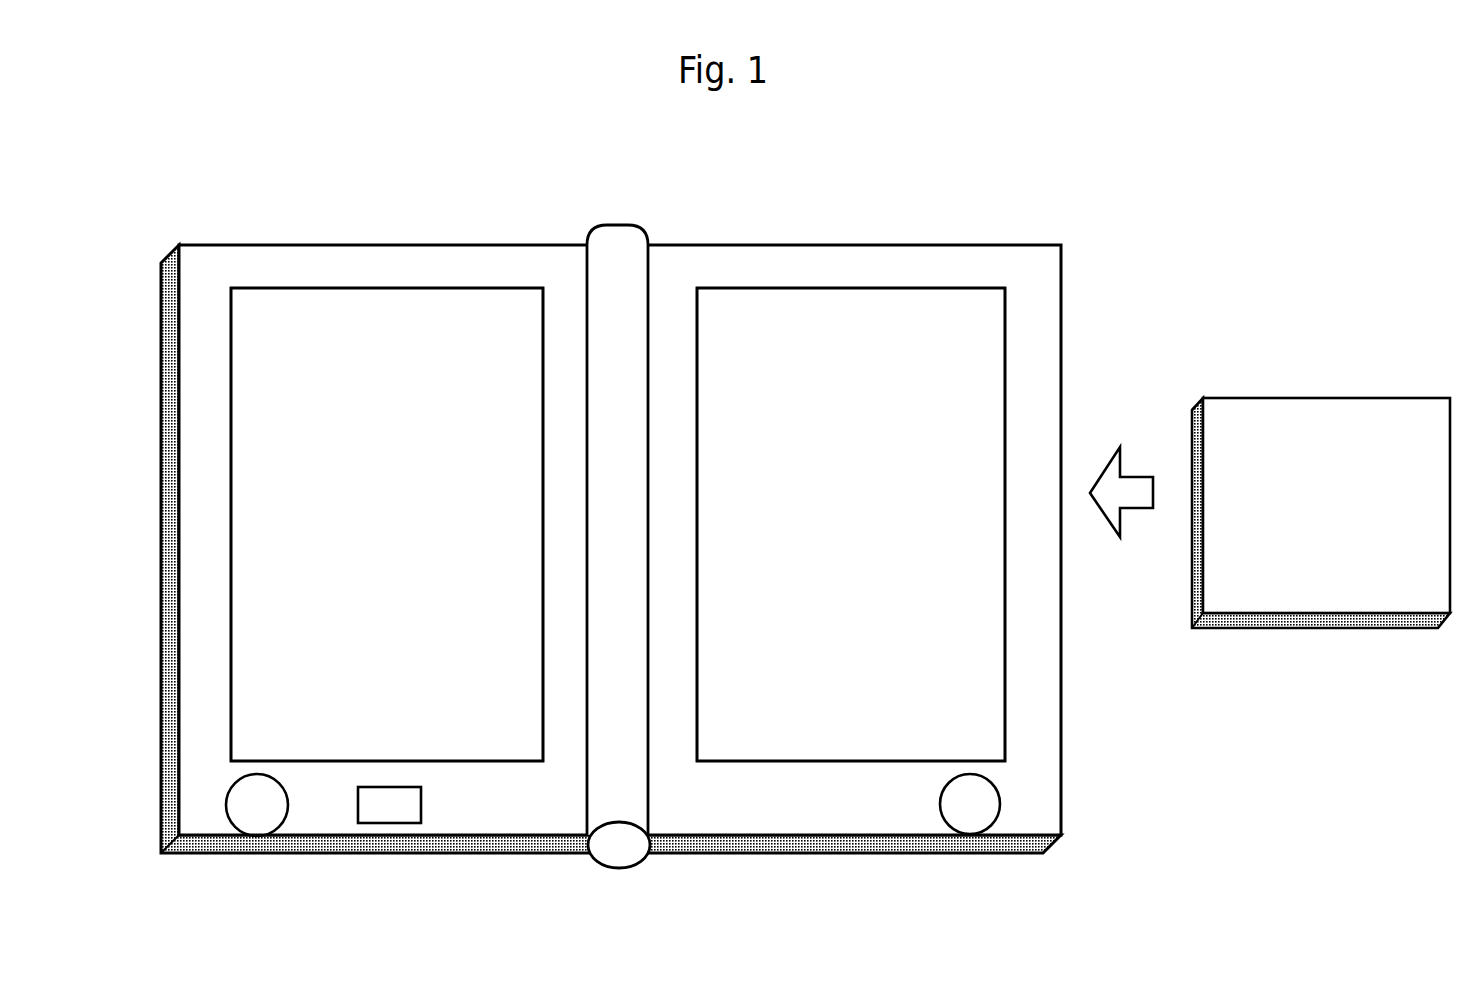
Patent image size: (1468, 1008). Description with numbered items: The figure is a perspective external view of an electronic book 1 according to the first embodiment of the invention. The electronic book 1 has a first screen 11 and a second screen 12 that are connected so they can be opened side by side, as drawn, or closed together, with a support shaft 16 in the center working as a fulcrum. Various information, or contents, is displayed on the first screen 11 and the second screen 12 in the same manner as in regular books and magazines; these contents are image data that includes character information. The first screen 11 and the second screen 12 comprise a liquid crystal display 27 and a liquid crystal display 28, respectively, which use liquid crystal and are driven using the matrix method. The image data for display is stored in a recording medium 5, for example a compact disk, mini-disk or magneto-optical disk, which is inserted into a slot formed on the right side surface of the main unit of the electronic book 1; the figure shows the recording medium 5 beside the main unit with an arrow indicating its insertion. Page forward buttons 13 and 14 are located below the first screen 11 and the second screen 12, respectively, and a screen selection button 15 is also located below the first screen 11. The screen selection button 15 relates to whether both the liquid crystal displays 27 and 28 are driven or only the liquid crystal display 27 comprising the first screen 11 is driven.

The electronic book 1 is at (691, 232).
The recording medium 5 is at (1328, 398).
The first screen 11 is at (403, 536).
The second screen 12 is at (866, 536).
The page forward button 13 is at (258, 823).
The page forward button 14 is at (970, 822).
The screen selection button 15 is at (382, 825).
The support shaft 16 is at (618, 855).
The liquid crystal display 27 is at (380, 288).
The liquid crystal display 28 is at (843, 287).